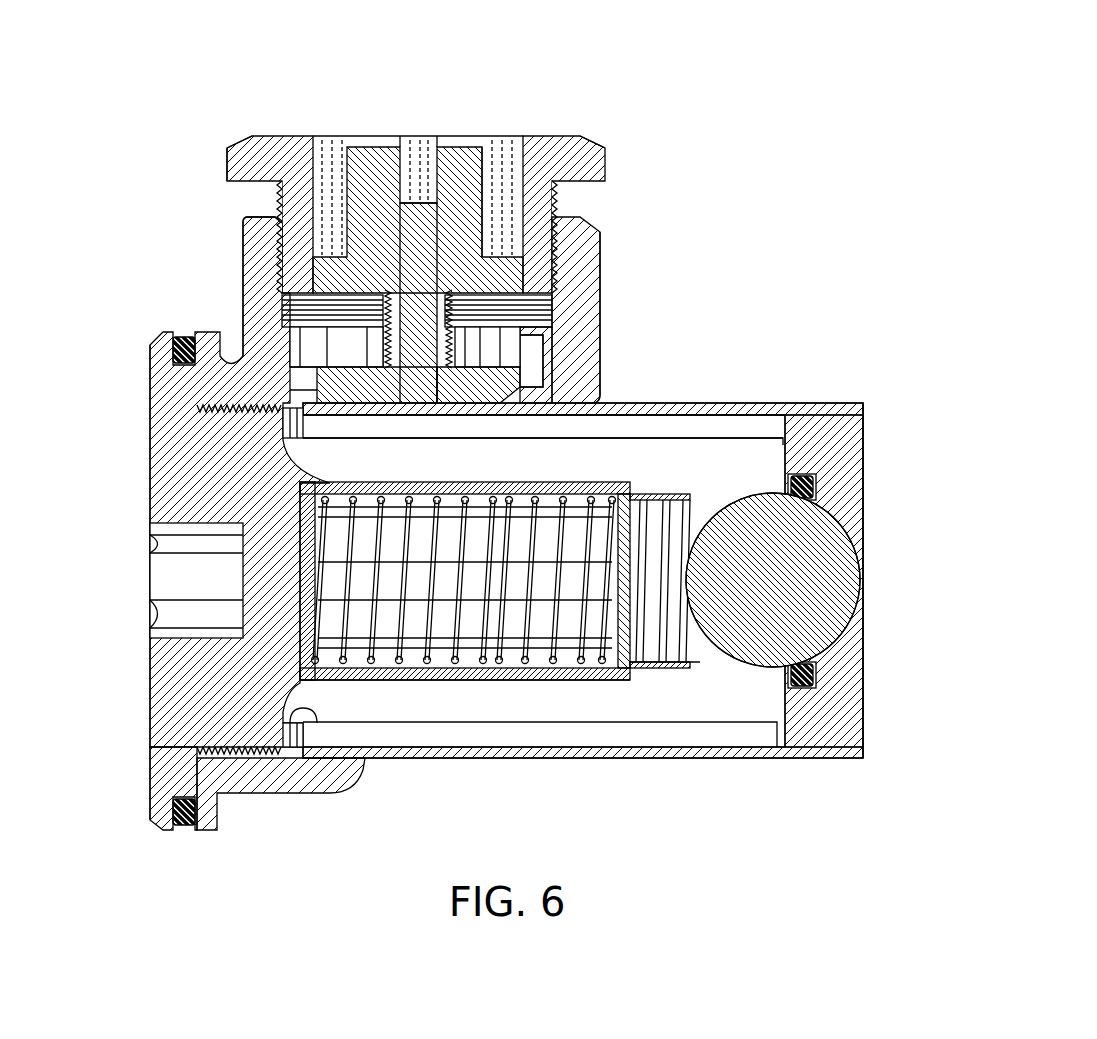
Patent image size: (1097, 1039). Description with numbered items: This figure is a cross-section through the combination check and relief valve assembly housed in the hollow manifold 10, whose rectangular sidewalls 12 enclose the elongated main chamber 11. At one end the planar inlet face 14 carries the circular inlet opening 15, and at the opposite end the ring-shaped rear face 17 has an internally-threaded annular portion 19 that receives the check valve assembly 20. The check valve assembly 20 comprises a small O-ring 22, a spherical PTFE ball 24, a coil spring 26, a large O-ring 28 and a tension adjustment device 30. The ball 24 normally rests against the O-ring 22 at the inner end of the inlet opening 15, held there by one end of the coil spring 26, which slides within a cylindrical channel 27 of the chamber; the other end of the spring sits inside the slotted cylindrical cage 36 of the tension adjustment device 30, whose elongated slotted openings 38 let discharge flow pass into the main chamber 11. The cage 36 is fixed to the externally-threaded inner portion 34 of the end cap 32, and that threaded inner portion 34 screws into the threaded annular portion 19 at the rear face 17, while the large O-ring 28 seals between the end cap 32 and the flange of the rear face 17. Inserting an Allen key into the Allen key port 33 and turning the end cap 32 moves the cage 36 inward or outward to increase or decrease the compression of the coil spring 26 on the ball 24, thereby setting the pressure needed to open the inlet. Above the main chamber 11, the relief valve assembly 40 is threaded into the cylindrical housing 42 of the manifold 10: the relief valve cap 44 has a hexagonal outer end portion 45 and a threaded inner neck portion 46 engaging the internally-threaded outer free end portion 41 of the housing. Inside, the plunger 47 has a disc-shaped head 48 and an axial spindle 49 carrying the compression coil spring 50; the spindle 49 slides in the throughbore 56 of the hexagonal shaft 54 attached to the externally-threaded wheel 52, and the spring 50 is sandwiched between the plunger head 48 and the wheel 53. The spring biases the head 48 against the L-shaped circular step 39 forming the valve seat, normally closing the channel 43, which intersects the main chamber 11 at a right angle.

The manifold 10 is at (835, 771).
The main chamber 11 is at (697, 466).
The sidewall 12 is at (640, 440).
The inlet face 14 is at (865, 418).
The inlet opening 15 is at (822, 668).
The rear face 17 is at (200, 772).
The internally-threaded annular portion 19 is at (312, 720).
The check valve assembly 20 is at (528, 696).
The O-ring 22 is at (815, 488).
The ball 24 is at (855, 556).
The coil spring 26 is at (455, 575).
The cylindrical channel 27 is at (708, 670).
The O-ring 28 is at (190, 338).
The tension adjustment device 30 is at (139, 741).
The end cap 32 is at (150, 437).
The Allen key port 33 is at (180, 575).
The threaded inner portion 34 is at (245, 748).
The slotted cylindrical cage 36 is at (603, 482).
The slotted openings 38 is at (628, 505).
The L-shaped circular step 39 is at (600, 395).
The relief valve assembly 40 is at (213, 128).
The outer free end portion 41 is at (260, 233).
The cylindrical housing 42 is at (228, 273).
The channel 43 is at (497, 150).
The relief valve cap 44 is at (537, 133).
The outer end portion 45 is at (228, 158).
The threaded inner neck portion 46 is at (553, 207).
The plunger 47 is at (312, 366).
The disc-shaped head 48 is at (500, 348).
The spindle 49 is at (392, 185).
The compression coil spring 50 is at (383, 325).
The externally-threaded wheel 52 is at (492, 195).
The wheel 53 is at (525, 320).
The hexagonal shaft 54 is at (347, 188).
The throughbore 56 is at (405, 185).